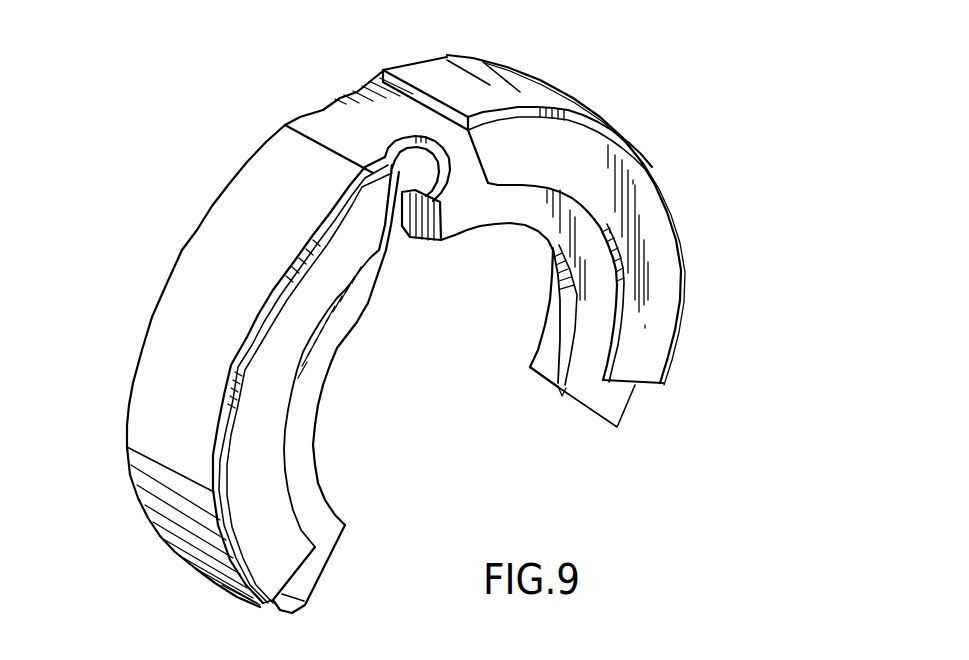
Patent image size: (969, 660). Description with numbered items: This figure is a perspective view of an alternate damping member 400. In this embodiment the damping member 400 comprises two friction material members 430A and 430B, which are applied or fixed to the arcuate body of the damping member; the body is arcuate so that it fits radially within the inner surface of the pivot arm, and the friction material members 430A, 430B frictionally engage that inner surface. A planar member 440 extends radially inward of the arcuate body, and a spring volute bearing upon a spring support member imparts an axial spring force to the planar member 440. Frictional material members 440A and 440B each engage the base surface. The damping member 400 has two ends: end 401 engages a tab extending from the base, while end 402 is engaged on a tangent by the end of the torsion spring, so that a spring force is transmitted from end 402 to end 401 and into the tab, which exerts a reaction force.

The damping member 400 is at (645, 82).
The end of damping member 401 is at (605, 428).
The end of damping member 402 is at (320, 582).
The friction material member 430A is at (667, 207).
The friction material member 430B is at (217, 240).
The planar member 440 is at (506, 207).
The frictional material member 440A is at (652, 335).
The frictional material member 440B is at (247, 503).